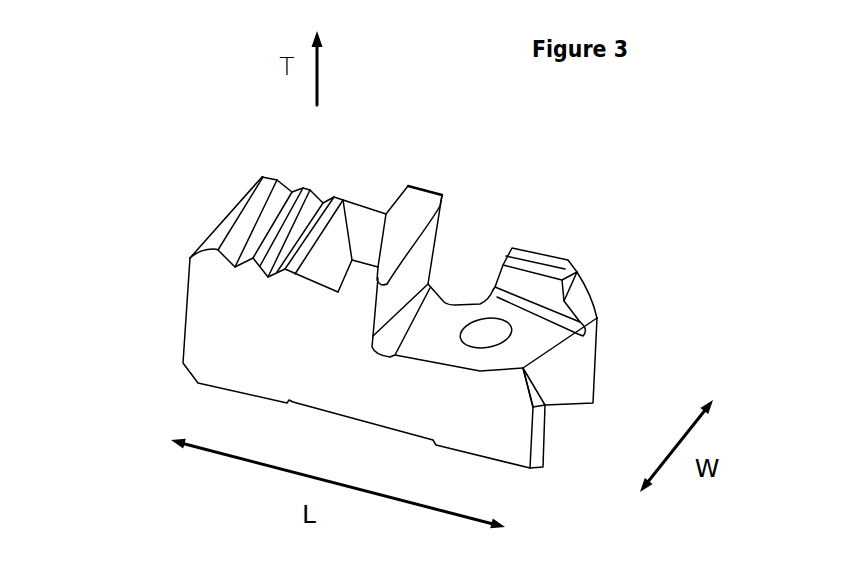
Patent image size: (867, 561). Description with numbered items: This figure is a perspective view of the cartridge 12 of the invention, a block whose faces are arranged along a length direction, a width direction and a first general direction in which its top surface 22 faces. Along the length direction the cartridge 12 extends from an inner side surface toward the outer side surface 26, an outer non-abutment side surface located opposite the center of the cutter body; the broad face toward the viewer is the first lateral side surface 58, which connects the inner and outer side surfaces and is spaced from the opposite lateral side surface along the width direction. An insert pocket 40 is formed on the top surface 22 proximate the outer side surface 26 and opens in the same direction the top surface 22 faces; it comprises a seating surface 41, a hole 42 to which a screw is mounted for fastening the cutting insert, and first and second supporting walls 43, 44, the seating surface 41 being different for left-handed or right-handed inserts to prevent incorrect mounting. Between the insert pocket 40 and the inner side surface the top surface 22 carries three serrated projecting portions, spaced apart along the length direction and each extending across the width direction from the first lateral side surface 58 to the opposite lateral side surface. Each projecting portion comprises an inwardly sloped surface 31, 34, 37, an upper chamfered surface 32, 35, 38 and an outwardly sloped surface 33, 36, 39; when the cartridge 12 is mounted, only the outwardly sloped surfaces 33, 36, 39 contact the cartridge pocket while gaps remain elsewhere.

The cartridge 12 is at (492, 166).
The top surface 22 is at (324, 180).
The outer side surface 26 is at (570, 418).
The inwardly sloped surface 31 is at (214, 234).
The upper chamfered surface 32 is at (232, 216).
The outwardly sloped surface 33 is at (267, 206).
The inwardly sloped surface 34 is at (293, 190).
The upper chamfered surface 35 is at (302, 185).
The outwardly sloped surface 36 is at (263, 266).
The inwardly sloped surface 37 is at (328, 200).
The upper chamfered surface 38 is at (334, 204).
The outwardly sloped surface 39 is at (327, 274).
The insert pocket 40 is at (460, 273).
The seating surface 41 is at (527, 353).
The hole 42 is at (497, 333).
The first supporting wall 43 is at (572, 283).
The second supporting wall 44 is at (424, 232).
The first lateral side surface 58 is at (228, 353).